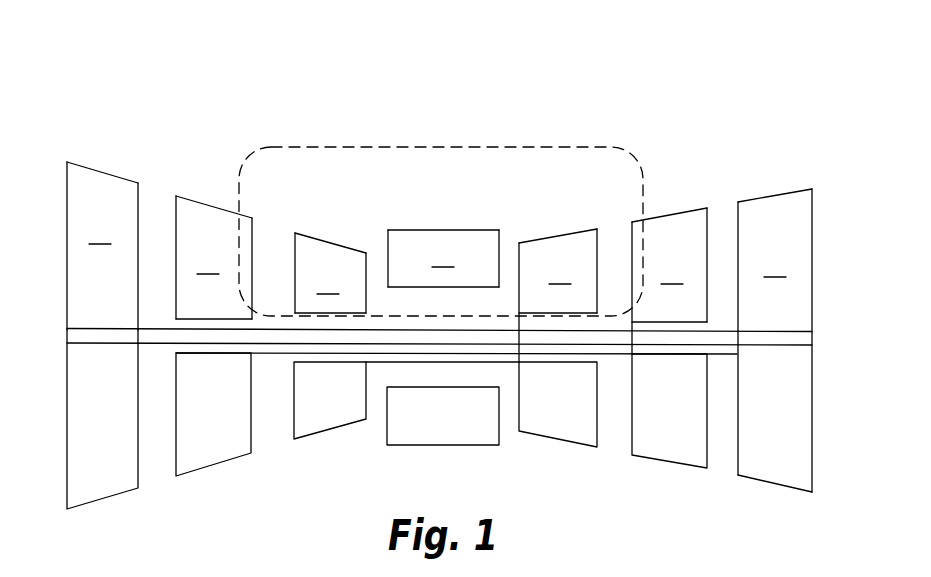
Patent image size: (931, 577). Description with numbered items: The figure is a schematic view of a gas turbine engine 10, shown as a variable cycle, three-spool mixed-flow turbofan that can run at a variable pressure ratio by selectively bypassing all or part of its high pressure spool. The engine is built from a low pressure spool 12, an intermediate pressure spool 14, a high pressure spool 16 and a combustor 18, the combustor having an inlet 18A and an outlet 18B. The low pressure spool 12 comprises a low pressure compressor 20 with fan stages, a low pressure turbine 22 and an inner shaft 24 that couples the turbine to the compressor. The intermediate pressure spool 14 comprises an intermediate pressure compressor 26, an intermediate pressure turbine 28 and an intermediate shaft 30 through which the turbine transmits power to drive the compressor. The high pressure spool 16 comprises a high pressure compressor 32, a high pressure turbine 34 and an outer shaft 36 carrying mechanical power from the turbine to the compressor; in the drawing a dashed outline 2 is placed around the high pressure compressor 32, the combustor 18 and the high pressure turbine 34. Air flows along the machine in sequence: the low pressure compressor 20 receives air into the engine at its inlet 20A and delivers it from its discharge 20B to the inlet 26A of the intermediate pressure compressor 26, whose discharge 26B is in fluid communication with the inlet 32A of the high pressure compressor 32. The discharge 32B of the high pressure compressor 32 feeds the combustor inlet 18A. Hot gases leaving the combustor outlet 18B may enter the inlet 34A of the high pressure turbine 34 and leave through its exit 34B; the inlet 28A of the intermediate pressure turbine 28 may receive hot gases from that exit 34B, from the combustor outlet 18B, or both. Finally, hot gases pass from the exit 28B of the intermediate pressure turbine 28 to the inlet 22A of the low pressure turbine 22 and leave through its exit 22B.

The gas turbine engine 10 is at (736, 90).
The central region 2 is at (353, 146).
The low pressure spool 12 is at (105, 499).
The intermediate pressure spool 14 is at (208, 467).
The high pressure spool 16 is at (325, 431).
The combustor 18 is at (440, 310).
The inlet 18A is at (388, 250).
The outlet 18B is at (500, 233).
The low pressure compressor 20 is at (96, 220).
The inlet 20A is at (66, 193).
The discharge 20B is at (138, 205).
The low pressure turbine 22 is at (779, 313).
The inlet 22A is at (738, 225).
The exit 22B is at (812, 210).
The inner shaft 24 is at (730, 346).
The intermediate pressure compressor 26 is at (210, 223).
The inlet 26A is at (176, 237).
The discharge 26B is at (252, 221).
The intermediate pressure turbine 28 is at (652, 247).
The inlet 28A is at (632, 243).
The exit 28B is at (707, 222).
The intermediate shaft 30 is at (603, 355).
The high pressure compressor 32 is at (322, 245).
The inlet 32A is at (295, 272).
The discharge 32B is at (366, 270).
The high pressure turbine 34 is at (555, 260).
The inlet 34A is at (519, 262).
The exit 34B is at (598, 229).
The outer shaft 36 is at (498, 363).